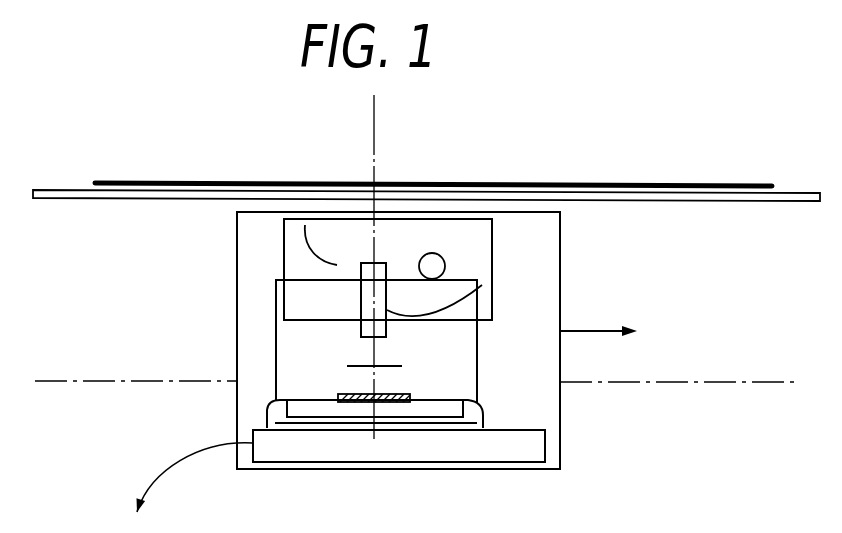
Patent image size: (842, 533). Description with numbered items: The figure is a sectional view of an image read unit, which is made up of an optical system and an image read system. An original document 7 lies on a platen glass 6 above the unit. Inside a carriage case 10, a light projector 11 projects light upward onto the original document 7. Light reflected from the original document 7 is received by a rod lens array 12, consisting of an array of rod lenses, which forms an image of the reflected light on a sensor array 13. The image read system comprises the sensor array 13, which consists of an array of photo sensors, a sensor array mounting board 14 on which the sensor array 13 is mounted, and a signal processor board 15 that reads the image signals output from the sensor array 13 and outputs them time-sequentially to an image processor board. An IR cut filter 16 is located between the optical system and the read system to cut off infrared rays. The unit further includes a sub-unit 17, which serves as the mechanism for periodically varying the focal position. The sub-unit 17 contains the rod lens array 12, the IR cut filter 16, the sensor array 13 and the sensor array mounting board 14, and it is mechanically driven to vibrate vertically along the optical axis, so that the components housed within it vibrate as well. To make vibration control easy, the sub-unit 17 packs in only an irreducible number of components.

The platen glass 6 is at (63, 189).
The original document 7 is at (126, 181).
The carriage case 10 is at (237, 253).
The light projector 11 is at (492, 240).
The rod lens array 12 is at (392, 328).
The sensor array 13 is at (387, 404).
The sensor array mounting board 14 is at (450, 410).
The signal processor board 15 is at (282, 455).
The IR cut filter 16 is at (343, 366).
The sub-unit 17 is at (477, 347).